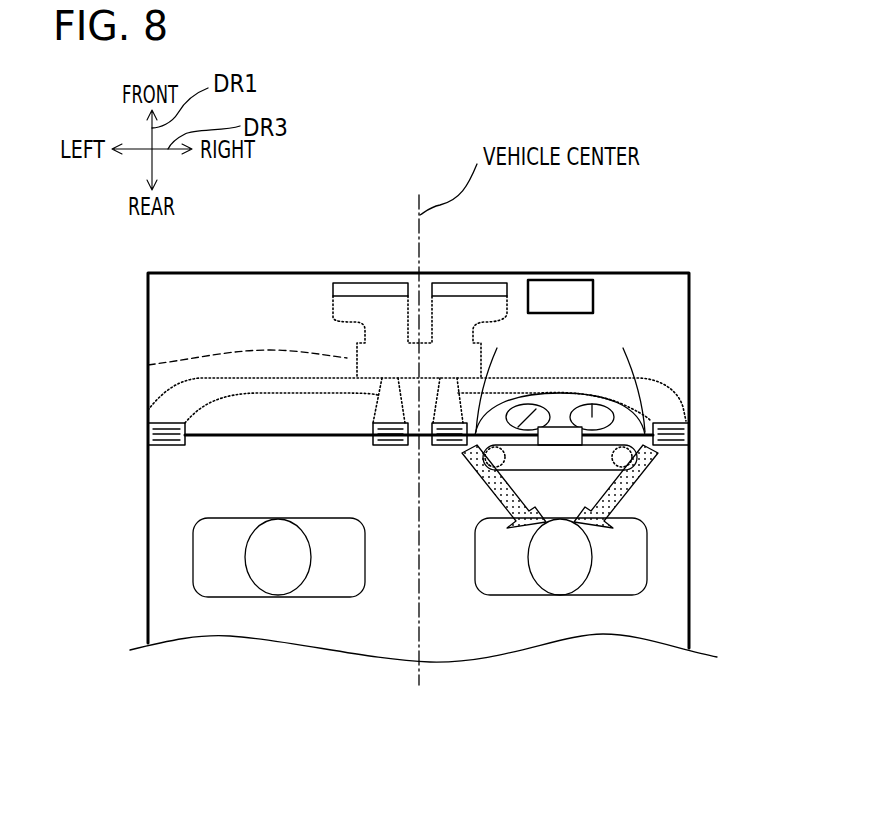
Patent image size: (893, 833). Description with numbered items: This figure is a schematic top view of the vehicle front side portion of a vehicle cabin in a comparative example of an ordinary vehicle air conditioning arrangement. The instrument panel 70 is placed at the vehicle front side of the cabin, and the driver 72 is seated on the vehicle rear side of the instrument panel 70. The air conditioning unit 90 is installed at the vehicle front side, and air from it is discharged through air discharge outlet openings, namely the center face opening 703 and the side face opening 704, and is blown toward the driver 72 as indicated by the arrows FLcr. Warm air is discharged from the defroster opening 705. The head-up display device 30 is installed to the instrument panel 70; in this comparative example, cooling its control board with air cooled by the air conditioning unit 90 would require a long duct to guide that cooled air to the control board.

The head-up display device 30 is at (540, 280).
The instrument panel 70 is at (670, 322).
The driver 72 is at (635, 578).
The air conditioning unit 90 is at (148, 365).
The center face opening 703 is at (378, 447).
The side face opening 704 is at (163, 447).
The defroster opening 705 is at (347, 283).
The arrows indicating air flow FLcr is at (492, 484).